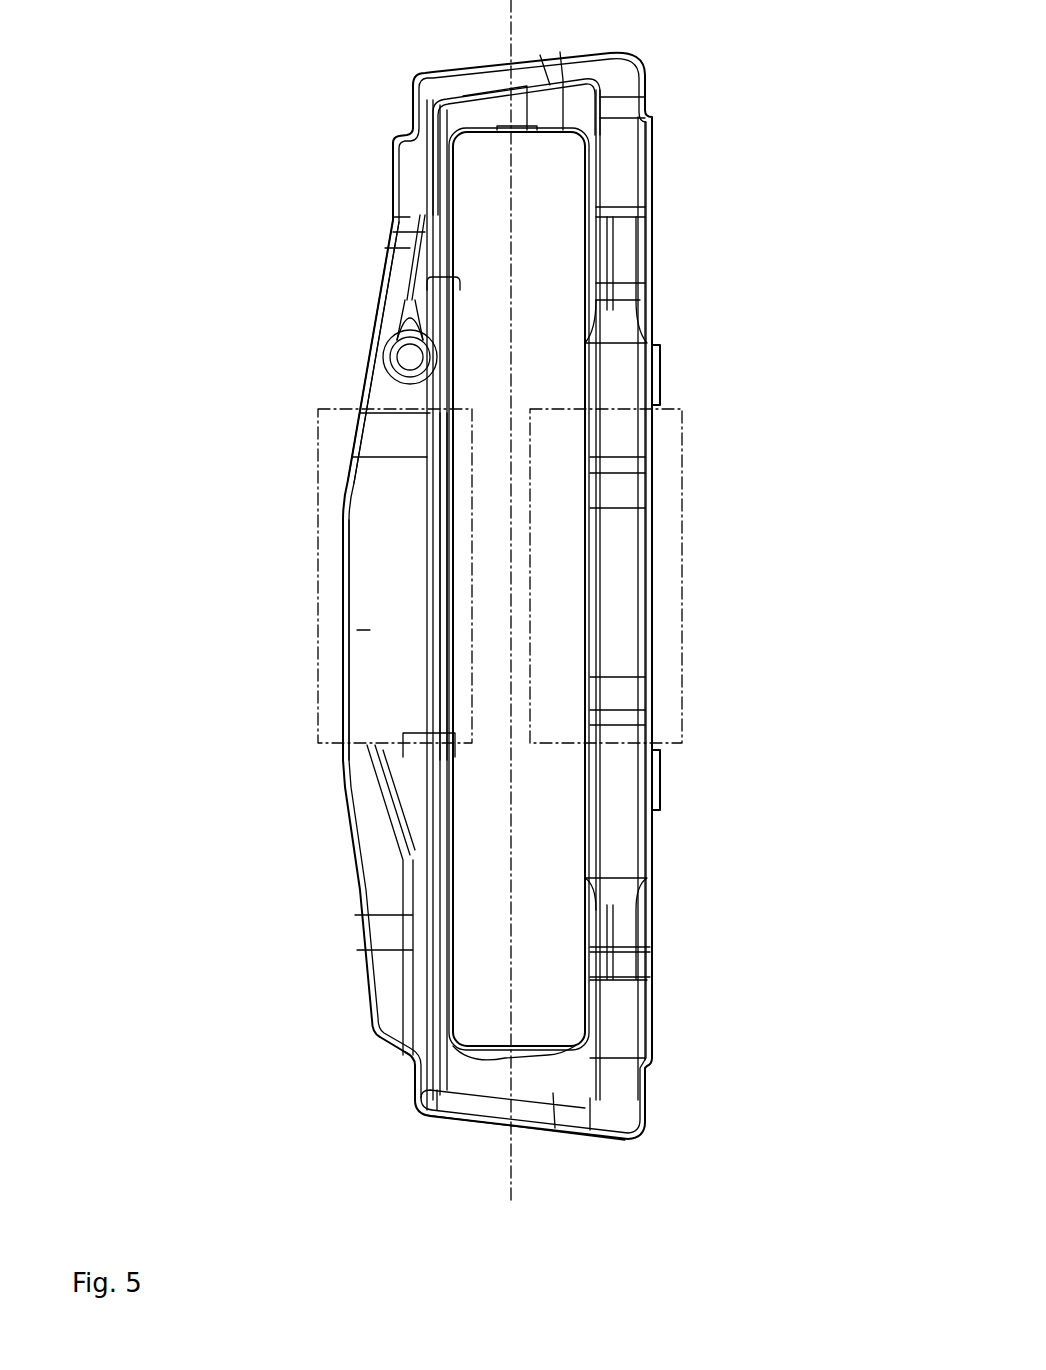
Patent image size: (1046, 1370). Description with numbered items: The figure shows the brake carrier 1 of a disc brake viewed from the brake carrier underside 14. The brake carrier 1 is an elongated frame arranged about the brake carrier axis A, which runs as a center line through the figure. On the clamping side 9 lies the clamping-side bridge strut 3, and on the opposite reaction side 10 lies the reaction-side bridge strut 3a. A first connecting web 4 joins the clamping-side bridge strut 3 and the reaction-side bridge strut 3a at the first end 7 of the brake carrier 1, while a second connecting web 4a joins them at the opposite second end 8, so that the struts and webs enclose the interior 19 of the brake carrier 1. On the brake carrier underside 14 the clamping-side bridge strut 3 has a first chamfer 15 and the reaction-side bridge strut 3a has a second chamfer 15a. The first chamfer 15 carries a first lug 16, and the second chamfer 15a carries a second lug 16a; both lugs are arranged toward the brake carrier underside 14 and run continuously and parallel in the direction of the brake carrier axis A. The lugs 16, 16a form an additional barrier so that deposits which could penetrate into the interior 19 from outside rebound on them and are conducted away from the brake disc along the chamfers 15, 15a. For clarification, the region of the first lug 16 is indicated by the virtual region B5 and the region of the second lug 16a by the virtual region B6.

The brake carrier 1 is at (660, 148).
The clamping-side bridge strut 3 is at (635, 531).
The reaction-side bridge strut 3a is at (360, 400).
The first connecting web 4 is at (455, 67).
The second connecting web 4a is at (545, 1135).
The first end 7 is at (620, 48).
The second end 8 is at (530, 1158).
The clamping side 9 is at (690, 302).
The reaction side 10 is at (338, 311).
The brake carrier underside 14 is at (240, 120).
The first chamfer 15 is at (620, 605).
The second chamfer 15a is at (358, 630).
The first lug 16 is at (607, 633).
The second lug 16a is at (427, 501).
The interior 19 is at (490, 693).
The brake carrier axis A is at (501, 1167).
The virtual region B5 is at (680, 452).
The virtual region B6 is at (318, 528).